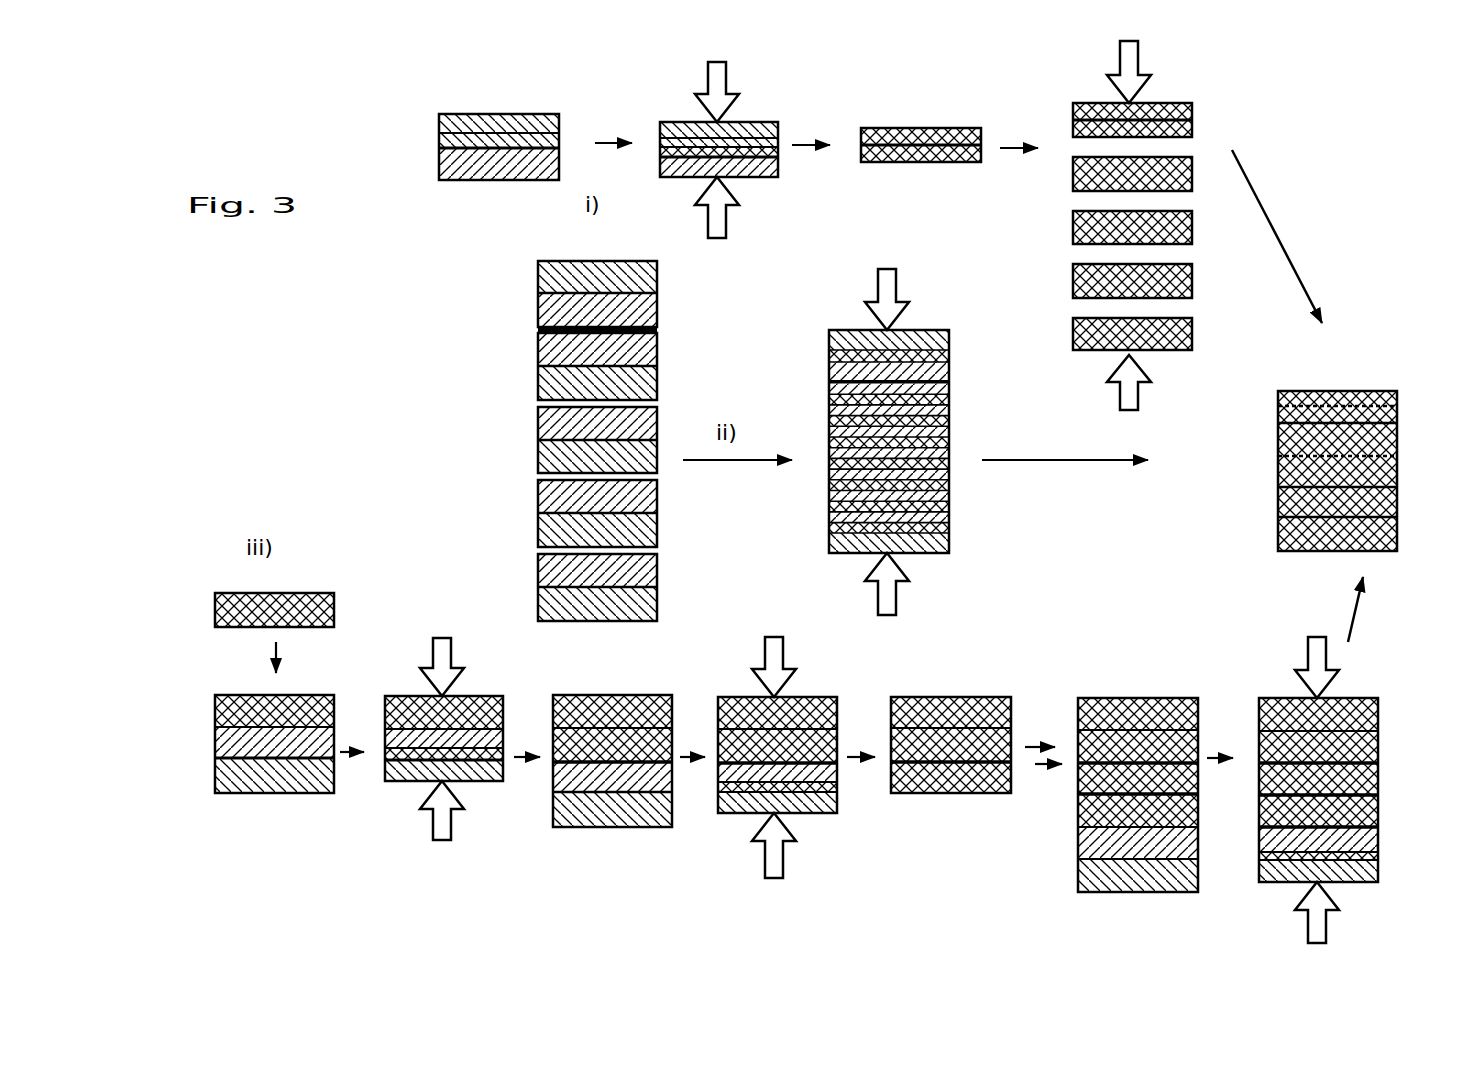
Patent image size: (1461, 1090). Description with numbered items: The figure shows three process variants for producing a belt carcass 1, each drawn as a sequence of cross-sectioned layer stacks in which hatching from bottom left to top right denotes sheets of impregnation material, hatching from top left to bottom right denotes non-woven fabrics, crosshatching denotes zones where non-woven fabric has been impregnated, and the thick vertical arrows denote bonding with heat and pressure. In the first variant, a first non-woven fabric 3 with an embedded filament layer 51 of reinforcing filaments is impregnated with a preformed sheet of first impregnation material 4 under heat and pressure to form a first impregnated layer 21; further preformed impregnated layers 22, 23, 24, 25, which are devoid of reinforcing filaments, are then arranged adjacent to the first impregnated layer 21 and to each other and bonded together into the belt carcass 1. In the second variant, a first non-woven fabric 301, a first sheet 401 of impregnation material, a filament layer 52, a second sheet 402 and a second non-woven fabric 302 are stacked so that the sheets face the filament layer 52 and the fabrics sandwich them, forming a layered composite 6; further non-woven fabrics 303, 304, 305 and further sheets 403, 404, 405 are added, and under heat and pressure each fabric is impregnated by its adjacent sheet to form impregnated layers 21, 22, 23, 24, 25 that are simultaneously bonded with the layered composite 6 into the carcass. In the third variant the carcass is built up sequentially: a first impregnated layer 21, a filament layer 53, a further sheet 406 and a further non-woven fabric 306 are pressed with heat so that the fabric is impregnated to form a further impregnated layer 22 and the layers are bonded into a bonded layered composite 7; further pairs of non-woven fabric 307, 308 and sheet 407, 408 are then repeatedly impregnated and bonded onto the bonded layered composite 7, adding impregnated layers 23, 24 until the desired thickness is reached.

The belt carcass 1 is at (1328, 372).
The first non-woven fabric 3 is at (500, 118).
The first impregnation material 4 is at (497, 150).
The filament layer 51 is at (439, 140).
The filament layer 52 is at (538, 330).
The filament layer 53 is at (578, 755).
The first impregnated layer 21 is at (886, 163).
The further impregnated layer 22 is at (1073, 172).
The further impregnated layer 23 is at (1073, 223).
The further impregnated layer 24 is at (1073, 275).
The further impregnated layer 25 is at (1073, 325).
The layered composite 6 is at (592, 435).
The bonded layered composite 7 is at (882, 691).
The first non-woven fabric 301 is at (538, 272).
The second non-woven fabric 302 is at (538, 382).
The further non-woven fabric 303 is at (538, 452).
The further non-woven fabric 304 is at (538, 520).
The further non-woven fabric 305 is at (538, 590).
The further non-woven fabric 306 is at (215, 740).
The further non-woven fabric 307 is at (557, 825).
The further non-woven fabric 308 is at (1110, 885).
The first sheet 401 is at (538, 300).
The second sheet 402 is at (538, 350).
The further sheet 403 is at (538, 420).
The further sheet 404 is at (538, 488).
The further sheet 405 is at (538, 558).
The further sheet 406 is at (215, 775).
The further sheet 407 is at (560, 790).
The further sheet 408 is at (1088, 838).